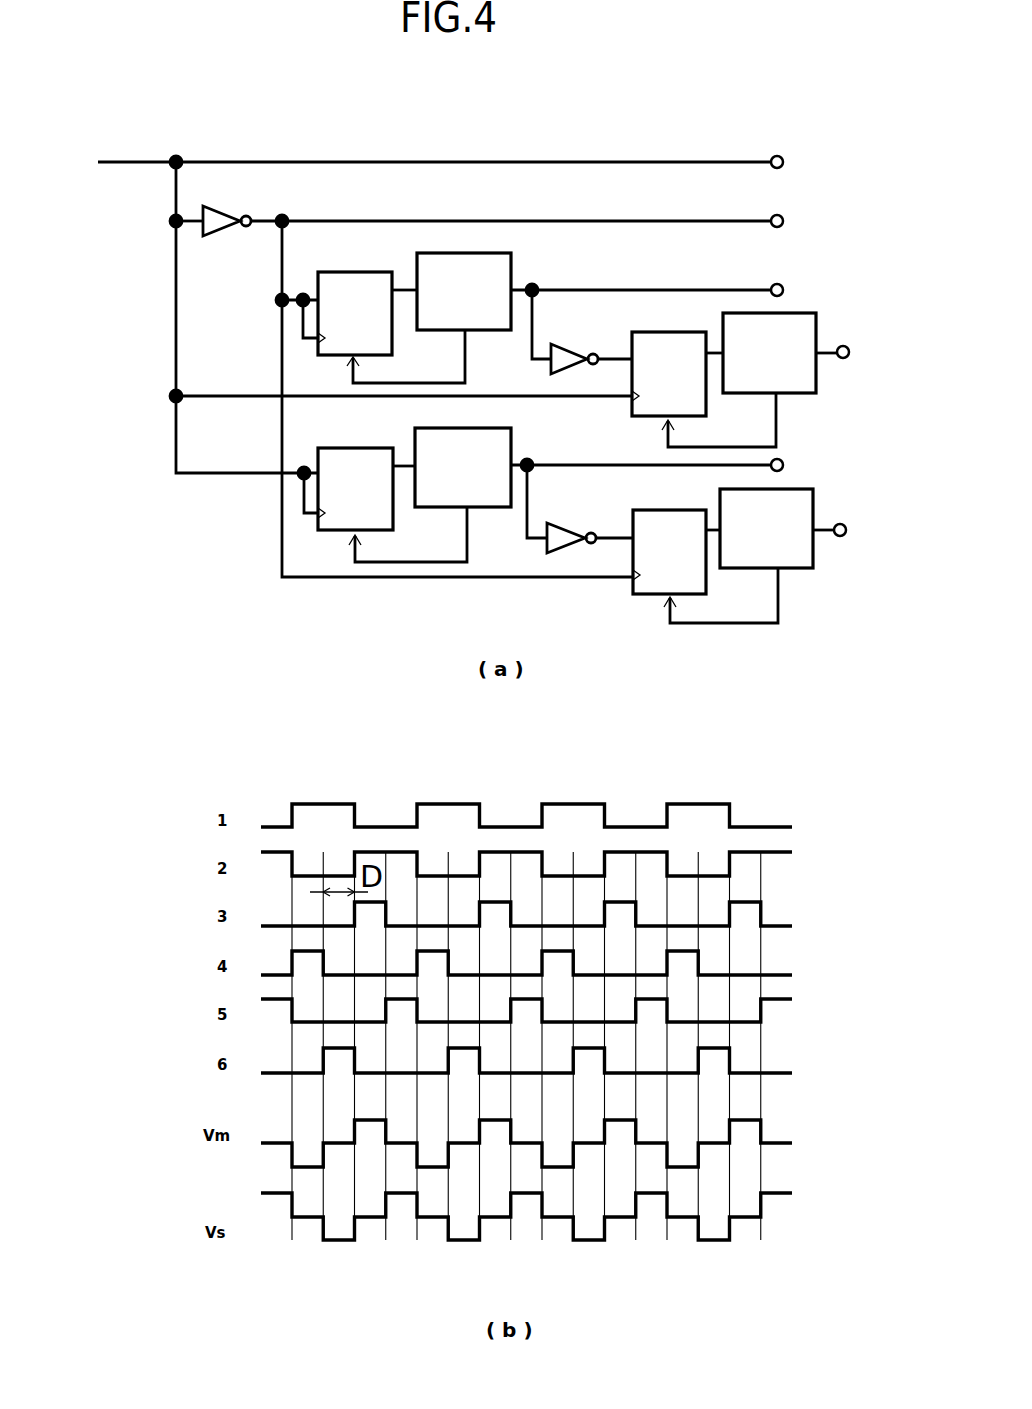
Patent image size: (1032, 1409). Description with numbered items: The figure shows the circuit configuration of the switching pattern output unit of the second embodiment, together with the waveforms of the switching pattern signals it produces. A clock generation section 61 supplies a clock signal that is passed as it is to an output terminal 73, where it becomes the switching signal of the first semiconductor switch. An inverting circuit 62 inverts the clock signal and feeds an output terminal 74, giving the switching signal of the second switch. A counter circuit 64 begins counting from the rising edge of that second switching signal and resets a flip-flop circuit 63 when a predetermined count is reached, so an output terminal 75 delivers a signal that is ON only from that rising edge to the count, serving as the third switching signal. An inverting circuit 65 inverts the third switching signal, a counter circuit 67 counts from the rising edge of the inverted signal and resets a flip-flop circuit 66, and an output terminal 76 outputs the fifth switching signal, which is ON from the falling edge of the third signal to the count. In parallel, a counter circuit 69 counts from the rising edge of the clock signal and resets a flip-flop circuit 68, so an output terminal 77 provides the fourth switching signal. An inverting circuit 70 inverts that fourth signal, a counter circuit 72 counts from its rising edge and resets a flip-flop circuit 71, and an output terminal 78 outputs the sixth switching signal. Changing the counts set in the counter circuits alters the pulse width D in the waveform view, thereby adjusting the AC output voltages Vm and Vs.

The clock generation section 61 is at (78, 140).
The inverting circuit 62 is at (224, 212).
The flip-flop circuit 63 is at (358, 272).
The counter circuit 64 is at (513, 263).
The inverting circuit 65 is at (561, 347).
The flip-flop circuit 66 is at (659, 334).
The counter circuit 67 is at (816, 330).
The flip-flop circuit 68 is at (358, 448).
The counter circuit 69 is at (513, 439).
The inverting circuit 70 is at (565, 523).
The flip-flop circuit 71 is at (659, 512).
The counter circuit 72 is at (814, 503).
The output terminal 73 is at (779, 155).
The output terminal 74 is at (779, 214).
The output terminal 75 is at (779, 283).
The output terminal 76 is at (848, 345).
The output terminal 77 is at (782, 458).
The output terminal 78 is at (846, 525).